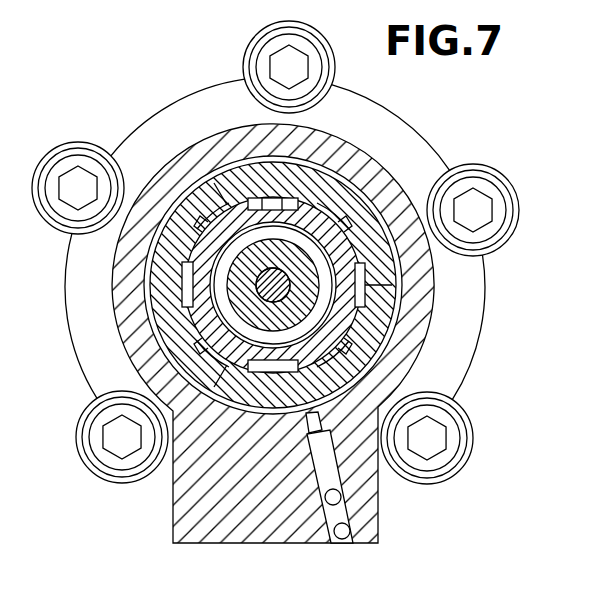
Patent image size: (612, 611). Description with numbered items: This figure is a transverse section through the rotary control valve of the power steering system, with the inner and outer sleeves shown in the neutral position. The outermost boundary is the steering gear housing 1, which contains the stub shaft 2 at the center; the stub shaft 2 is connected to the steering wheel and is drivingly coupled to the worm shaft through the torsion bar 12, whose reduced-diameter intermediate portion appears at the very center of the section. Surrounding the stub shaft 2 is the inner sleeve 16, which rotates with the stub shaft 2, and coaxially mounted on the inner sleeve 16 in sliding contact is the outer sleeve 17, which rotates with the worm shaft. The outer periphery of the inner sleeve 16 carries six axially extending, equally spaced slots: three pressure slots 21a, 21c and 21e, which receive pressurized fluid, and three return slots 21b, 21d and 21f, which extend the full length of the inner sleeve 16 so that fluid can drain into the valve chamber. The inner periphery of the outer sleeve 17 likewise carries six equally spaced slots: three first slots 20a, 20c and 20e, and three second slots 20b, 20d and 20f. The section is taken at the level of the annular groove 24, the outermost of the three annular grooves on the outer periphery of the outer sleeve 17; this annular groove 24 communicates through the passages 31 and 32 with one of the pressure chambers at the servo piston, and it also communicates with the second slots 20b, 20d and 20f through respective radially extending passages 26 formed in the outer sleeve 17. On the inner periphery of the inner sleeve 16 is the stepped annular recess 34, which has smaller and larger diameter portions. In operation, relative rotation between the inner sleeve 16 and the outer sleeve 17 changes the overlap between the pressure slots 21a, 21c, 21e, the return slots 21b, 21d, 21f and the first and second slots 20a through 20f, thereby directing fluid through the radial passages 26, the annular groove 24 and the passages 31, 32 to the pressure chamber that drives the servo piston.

The steering gear housing 1 is at (347, 80).
The stub shaft 2 is at (278, 320).
The torsion bar 12 is at (290, 289).
The inner sleeve 16 is at (213, 262).
The outer sleeve 17 is at (248, 167).
The first slot 20a is at (343, 173).
The second slot 20b is at (366, 274).
The first slot 20c is at (330, 351).
The second slot 20d is at (192, 378).
The first slot 20e is at (187, 285).
The second slot 20f is at (207, 197).
The pressure slot 21a is at (350, 218).
The return slot 21b is at (343, 323).
The pressure slot 21c is at (267, 366).
The return slot 21d is at (202, 327).
The pressure slot 21e is at (197, 260).
The return slot 21f is at (290, 190).
The annular groove 24 is at (355, 178).
The radially extending passage 26 is at (213, 183).
The passage 31 is at (340, 515).
The passage 32 is at (333, 497).
The stepped annular recess 34 is at (340, 375).